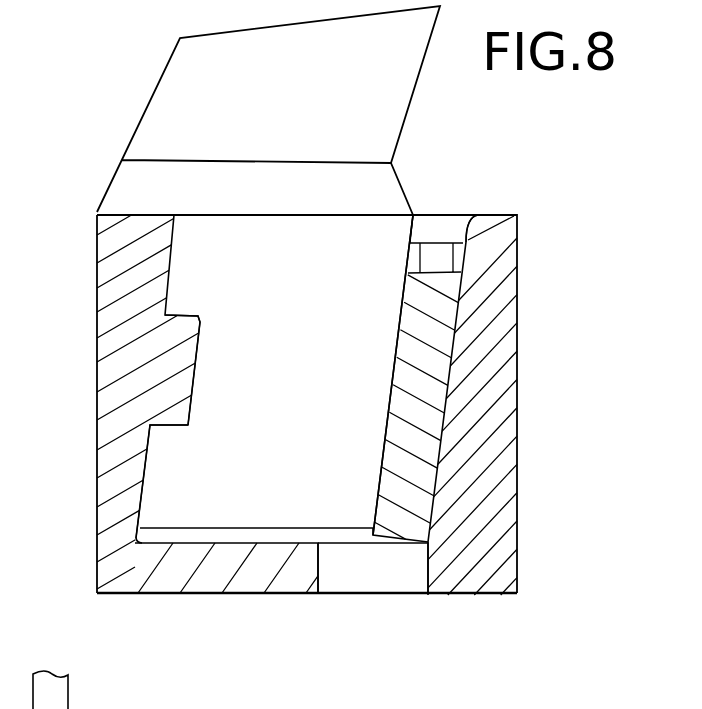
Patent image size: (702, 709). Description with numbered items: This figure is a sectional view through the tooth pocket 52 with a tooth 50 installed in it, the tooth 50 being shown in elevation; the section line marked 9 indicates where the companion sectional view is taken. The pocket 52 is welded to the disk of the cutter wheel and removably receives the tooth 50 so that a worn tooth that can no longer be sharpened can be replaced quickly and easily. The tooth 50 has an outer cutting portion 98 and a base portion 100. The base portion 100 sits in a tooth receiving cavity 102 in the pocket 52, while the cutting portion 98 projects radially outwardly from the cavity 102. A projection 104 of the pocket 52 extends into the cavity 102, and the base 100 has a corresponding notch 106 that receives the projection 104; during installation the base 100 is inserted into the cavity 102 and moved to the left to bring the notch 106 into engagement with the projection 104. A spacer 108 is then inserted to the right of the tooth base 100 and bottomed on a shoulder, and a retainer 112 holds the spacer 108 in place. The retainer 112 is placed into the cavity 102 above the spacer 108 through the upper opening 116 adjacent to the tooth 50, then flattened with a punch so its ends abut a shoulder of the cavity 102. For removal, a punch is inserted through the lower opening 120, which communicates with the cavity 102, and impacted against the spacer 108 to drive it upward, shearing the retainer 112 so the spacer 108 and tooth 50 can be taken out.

The section line 9- 9 is at (502, 158).
The tooth 50 is at (108, 164).
The tooth pocket 52 is at (72, 390).
The outer cutting portion 98 is at (284, 89).
The base portion 100 is at (279, 346).
The tooth receiving cavity 102 is at (204, 535).
The projection 104 is at (179, 419).
The notch 106 is at (197, 319).
The spacer 108 is at (443, 366).
The retainer 112 is at (427, 256).
The upper opening 116 is at (457, 230).
The lower opening 120 is at (353, 580).